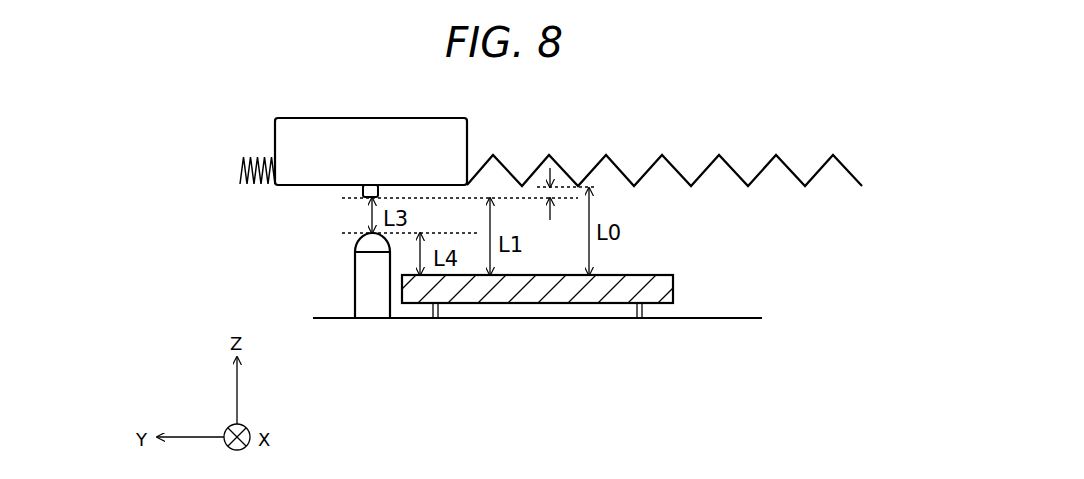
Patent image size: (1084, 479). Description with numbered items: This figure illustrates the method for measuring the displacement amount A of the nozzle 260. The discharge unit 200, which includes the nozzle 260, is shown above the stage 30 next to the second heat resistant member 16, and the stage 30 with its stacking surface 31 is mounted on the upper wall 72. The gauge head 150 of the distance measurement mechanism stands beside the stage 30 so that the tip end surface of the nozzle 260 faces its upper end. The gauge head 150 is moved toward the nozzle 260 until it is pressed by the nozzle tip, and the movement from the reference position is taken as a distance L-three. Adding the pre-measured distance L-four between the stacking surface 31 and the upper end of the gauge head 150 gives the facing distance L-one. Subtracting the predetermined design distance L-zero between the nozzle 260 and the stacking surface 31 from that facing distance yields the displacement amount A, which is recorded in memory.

The discharge unit 200 is at (432, 118).
The second heat resistant member 16 is at (623, 168).
The displacement amount A is at (540, 190).
The nozzle 260 is at (362, 189).
The gauge head 150 is at (355, 291).
The stage 30 is at (673, 285).
The stacking surface 31 is at (622, 276).
The upper wall 72 is at (718, 318).